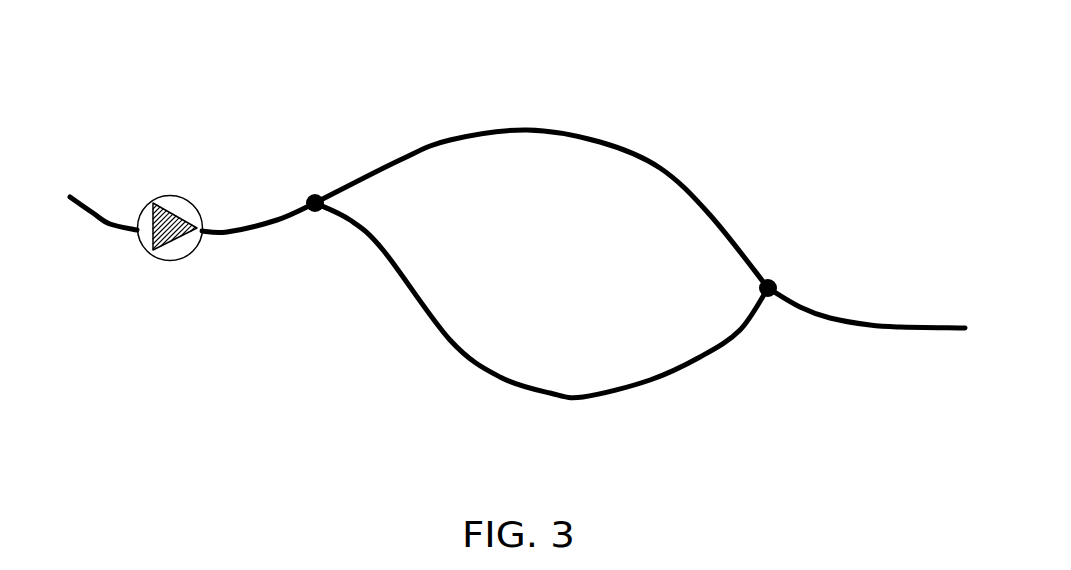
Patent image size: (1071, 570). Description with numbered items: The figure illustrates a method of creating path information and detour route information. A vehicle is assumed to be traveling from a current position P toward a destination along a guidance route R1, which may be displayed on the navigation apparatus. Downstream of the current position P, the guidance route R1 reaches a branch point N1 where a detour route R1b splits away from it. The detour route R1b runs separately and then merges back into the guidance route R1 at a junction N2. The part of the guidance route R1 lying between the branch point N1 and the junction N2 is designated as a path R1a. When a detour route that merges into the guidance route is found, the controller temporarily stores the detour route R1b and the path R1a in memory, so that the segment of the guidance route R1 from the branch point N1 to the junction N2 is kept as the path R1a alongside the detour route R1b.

The guidance route R1 is at (925, 326).
The path R1a is at (543, 130).
The detour route R1b is at (585, 399).
The branch point N1 is at (317, 210).
The junction N2 is at (770, 280).
The current position P is at (170, 260).